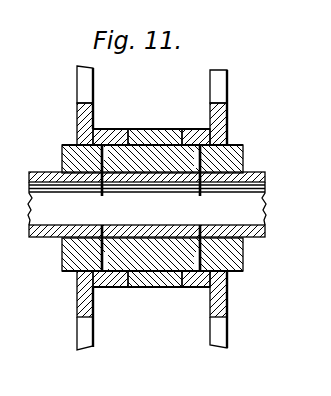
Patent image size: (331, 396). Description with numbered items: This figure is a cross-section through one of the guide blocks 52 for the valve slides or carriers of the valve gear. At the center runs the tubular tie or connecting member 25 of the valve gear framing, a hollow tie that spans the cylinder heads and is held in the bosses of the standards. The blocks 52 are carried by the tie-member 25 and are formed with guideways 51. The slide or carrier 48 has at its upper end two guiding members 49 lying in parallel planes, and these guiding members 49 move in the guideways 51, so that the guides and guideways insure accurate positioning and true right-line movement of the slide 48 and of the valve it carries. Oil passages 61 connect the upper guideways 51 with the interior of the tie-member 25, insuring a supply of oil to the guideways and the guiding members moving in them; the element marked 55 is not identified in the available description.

The tubular tie or connecting member 25 is at (147, 204).
The slide or carrier 48 is at (228, 118).
The guiding members 49 is at (200, 129).
The guideways 51 is at (183, 129).
The blocks 52 is at (143, 133).
The tube 55 is at (82, 89).
The oil passages 61 is at (102, 196).